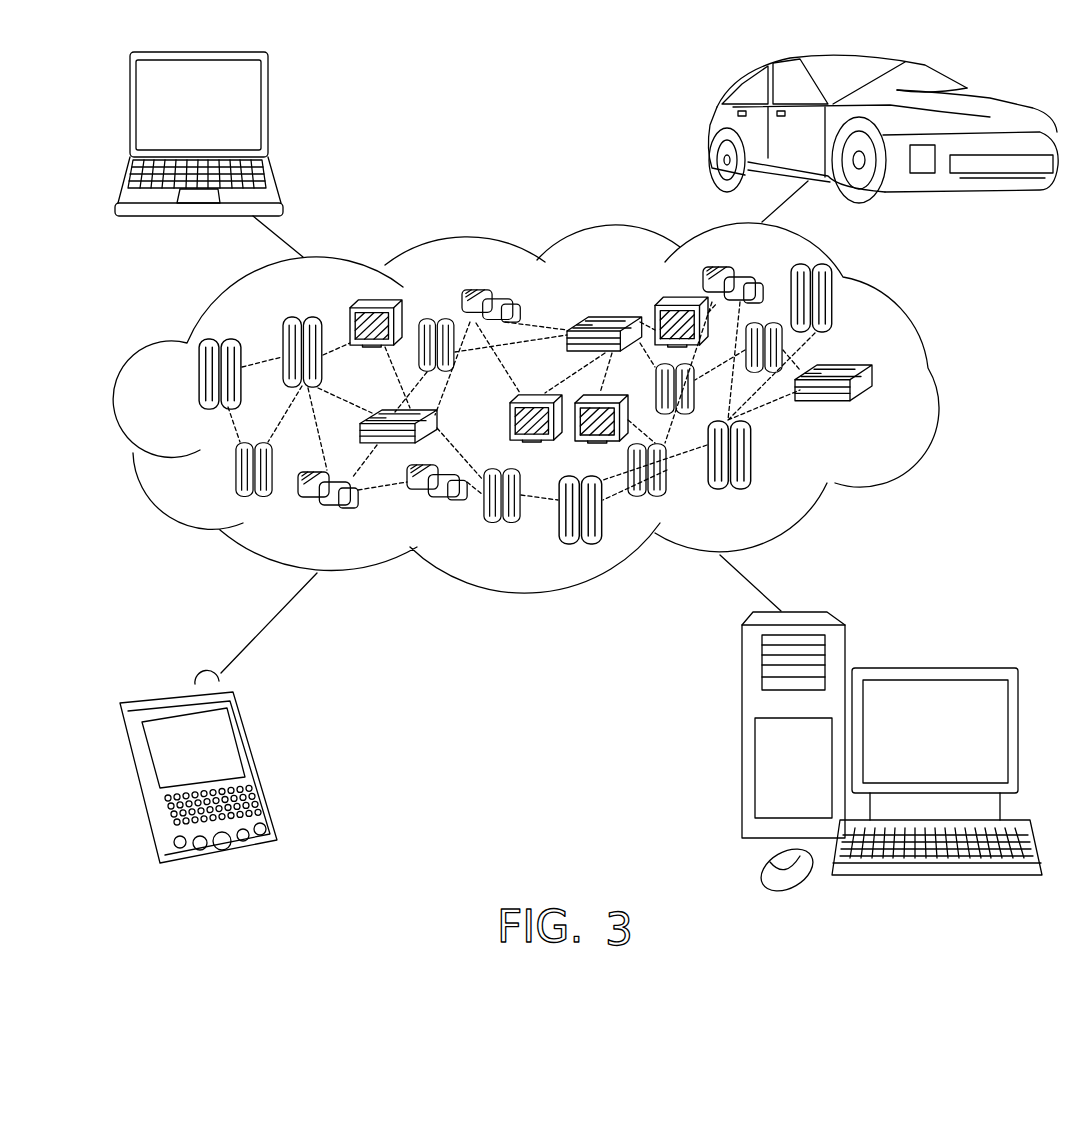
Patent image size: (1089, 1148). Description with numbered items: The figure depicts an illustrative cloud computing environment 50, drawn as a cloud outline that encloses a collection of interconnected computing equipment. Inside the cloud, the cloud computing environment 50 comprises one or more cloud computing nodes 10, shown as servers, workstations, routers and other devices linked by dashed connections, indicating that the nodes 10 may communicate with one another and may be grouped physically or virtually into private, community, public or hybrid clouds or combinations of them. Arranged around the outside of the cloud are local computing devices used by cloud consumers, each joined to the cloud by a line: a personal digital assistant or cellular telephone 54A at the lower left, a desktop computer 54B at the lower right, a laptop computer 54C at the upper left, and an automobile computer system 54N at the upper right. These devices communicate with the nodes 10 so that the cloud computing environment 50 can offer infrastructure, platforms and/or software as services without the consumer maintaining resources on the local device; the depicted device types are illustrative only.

The cloud computing nodes 10 is at (878, 414).
The cloud computing environment 50 is at (940, 374).
The personal digital assistant or cellular telephone 54A is at (258, 760).
The desktop computer 54B is at (932, 665).
The laptop computer 54C is at (270, 112).
The automobile computer system 54N is at (712, 128).